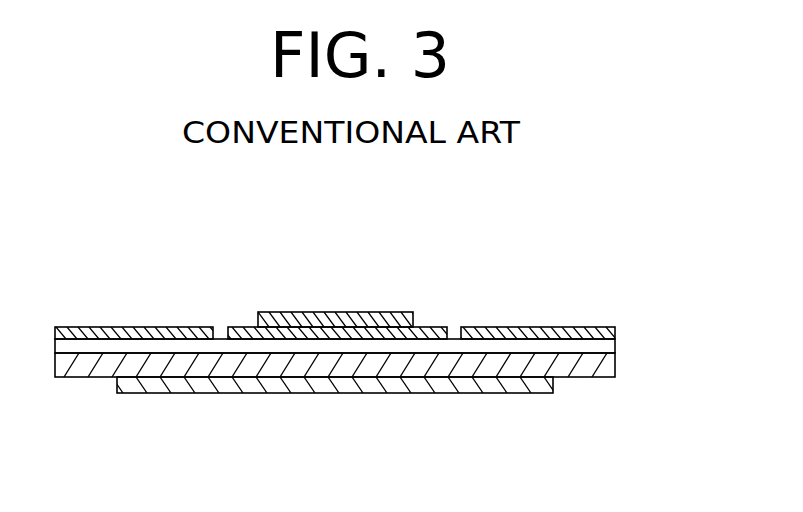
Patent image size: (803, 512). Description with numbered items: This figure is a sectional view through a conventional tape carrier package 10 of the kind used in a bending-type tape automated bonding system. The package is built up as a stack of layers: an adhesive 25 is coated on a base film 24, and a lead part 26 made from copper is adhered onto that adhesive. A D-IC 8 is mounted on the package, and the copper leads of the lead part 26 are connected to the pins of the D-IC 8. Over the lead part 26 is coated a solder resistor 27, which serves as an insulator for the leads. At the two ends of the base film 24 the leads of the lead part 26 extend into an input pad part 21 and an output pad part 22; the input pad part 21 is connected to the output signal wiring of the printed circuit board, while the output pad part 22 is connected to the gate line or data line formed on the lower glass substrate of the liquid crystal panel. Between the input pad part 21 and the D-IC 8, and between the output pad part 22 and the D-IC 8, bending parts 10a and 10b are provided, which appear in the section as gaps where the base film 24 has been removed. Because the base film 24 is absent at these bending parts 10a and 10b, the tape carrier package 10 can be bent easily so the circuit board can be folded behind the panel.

The tape carrier package 10 is at (570, 258).
The bending part 10a is at (448, 327).
The bending part 10b is at (218, 327).
The D-IC 8 is at (337, 312).
The base film 24 is at (615, 327).
The adhesive 25 is at (615, 347).
The lead part 26 is at (615, 365).
The solder resistor 27 is at (441, 393).
The output pad part 22 is at (83, 377).
The input pad part 21 is at (590, 378).